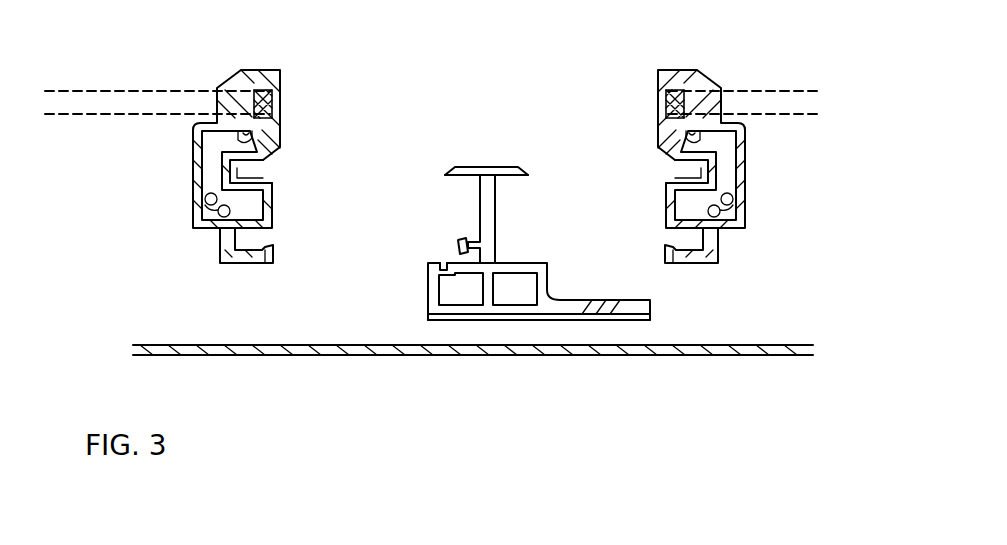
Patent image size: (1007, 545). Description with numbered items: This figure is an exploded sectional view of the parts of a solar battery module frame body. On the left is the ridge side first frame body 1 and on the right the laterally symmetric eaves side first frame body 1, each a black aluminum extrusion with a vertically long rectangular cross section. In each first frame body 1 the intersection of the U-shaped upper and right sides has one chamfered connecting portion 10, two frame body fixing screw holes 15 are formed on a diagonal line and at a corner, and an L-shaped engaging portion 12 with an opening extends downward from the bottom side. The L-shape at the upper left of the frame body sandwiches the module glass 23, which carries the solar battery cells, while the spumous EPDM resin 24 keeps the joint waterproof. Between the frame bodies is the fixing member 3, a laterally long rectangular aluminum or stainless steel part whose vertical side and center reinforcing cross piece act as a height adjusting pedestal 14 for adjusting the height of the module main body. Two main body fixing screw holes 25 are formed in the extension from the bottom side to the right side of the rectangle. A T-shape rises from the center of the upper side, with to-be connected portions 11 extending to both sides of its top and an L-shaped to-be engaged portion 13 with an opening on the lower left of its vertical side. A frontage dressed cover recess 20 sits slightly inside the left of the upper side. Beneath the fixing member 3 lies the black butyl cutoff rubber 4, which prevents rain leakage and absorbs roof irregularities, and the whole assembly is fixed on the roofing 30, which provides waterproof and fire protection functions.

The first frame body 1 is at (250, 72).
The fixing member 3 is at (488, 208).
The cutoff rubber 4 is at (512, 319).
The chamfered connecting portion 10 is at (250, 172).
The to-be connected portion 11 is at (460, 166).
The L-shaped engaging portion 12 is at (256, 258).
The L-shaped to-be engaged portion 13 is at (464, 242).
The height adjusting pedestal 14 is at (433, 283).
The frame body fixing screw hole 15 is at (268, 120).
The frontage dressed cover recess 20 is at (443, 262).
The module glass 23 is at (162, 105).
The spumous EPDM resin 24 is at (266, 92).
The main body fixing screw hole 25 is at (598, 306).
The roofing 30 is at (682, 347).